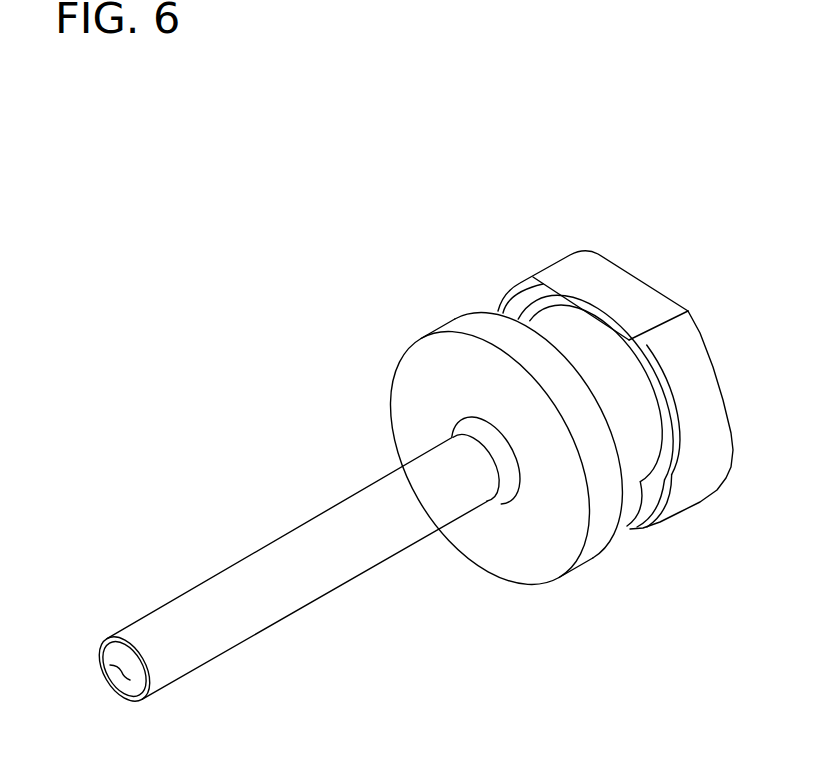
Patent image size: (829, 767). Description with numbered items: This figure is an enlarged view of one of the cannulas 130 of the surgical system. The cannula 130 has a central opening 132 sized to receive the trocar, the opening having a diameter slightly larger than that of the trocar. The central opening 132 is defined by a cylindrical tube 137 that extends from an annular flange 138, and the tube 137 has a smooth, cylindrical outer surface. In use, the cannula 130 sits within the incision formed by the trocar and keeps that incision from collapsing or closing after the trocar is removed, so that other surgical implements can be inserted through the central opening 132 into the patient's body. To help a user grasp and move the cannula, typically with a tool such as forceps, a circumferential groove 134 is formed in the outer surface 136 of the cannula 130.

The cannula 130 is at (309, 428).
The central opening 132 is at (119, 671).
The circumferential groove 134 is at (556, 330).
The outer surface 136 is at (468, 320).
The cylindrical tube 137 is at (237, 582).
The annular flange 138 is at (535, 562).